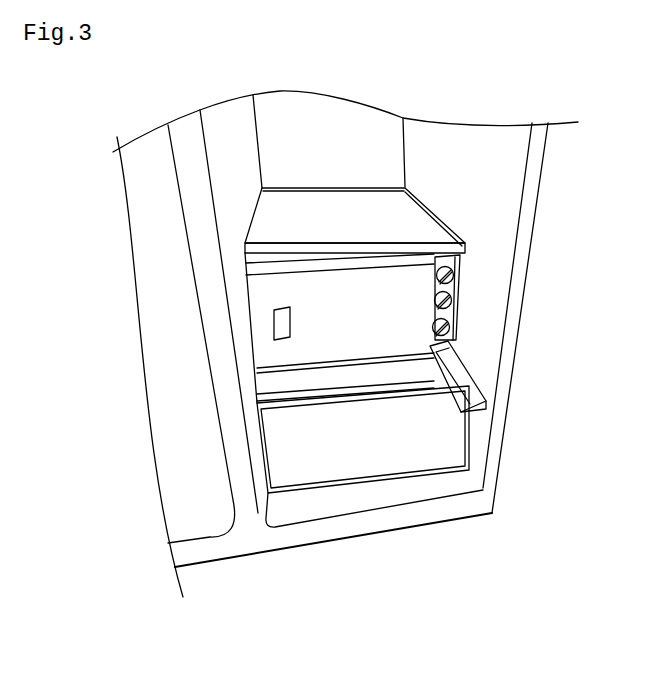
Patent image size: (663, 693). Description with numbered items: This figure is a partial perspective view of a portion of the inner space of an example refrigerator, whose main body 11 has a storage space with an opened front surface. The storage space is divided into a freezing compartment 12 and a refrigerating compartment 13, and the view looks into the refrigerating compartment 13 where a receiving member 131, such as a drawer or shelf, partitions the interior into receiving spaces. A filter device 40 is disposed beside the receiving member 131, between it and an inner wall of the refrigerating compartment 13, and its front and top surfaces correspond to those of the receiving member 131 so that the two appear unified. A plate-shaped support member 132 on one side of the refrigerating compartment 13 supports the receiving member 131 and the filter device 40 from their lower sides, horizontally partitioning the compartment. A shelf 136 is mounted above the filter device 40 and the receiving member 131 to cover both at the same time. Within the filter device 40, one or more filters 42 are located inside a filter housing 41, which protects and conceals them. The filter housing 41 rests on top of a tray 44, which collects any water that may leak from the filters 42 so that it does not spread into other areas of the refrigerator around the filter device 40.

The main body 11 is at (522, 307).
The freezing compartment 12 is at (173, 241).
The refrigerating compartment 13 is at (333, 156).
The receiving member 131 is at (330, 347).
The support member 132 is at (267, 374).
The shelf 136 is at (277, 233).
The filter device 40 is at (461, 320).
The filter housing 41 is at (457, 283).
The filters 42 is at (434, 302).
The tray 44 is at (473, 415).